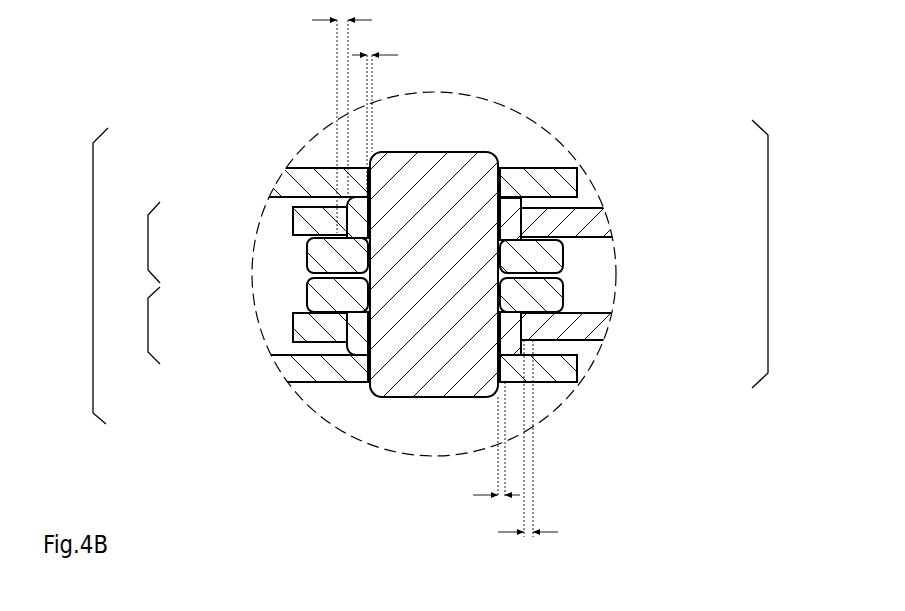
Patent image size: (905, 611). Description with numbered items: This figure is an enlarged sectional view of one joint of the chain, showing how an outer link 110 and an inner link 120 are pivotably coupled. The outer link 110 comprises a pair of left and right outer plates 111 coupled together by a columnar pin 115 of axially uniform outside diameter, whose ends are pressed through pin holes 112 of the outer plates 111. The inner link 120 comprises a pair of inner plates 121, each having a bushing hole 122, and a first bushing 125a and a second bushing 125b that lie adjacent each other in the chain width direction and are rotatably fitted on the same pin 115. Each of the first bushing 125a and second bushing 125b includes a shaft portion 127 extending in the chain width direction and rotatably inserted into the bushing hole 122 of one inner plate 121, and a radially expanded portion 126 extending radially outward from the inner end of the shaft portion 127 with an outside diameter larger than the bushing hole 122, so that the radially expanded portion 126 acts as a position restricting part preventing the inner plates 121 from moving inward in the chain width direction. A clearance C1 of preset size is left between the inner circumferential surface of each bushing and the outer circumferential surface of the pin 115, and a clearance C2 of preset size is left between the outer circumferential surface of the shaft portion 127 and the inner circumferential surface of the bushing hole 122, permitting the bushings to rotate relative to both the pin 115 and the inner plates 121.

The outer link 110 is at (779, 254).
The outer plate 111 is at (575, 188).
The pin hole 112 is at (513, 168).
The pin 115 is at (565, 263).
The inner link 120 is at (83, 276).
The inner plate 121 is at (293, 217).
The bushing hole 122 is at (535, 168).
The first bushing 125a is at (131, 242).
The second bushing 125b is at (131, 325).
The radially expanded portion 126 is at (320, 255).
The shaft portion 127 is at (320, 229).
The clearance C1 is at (436, 273).
The clearance C2 is at (434, 276).